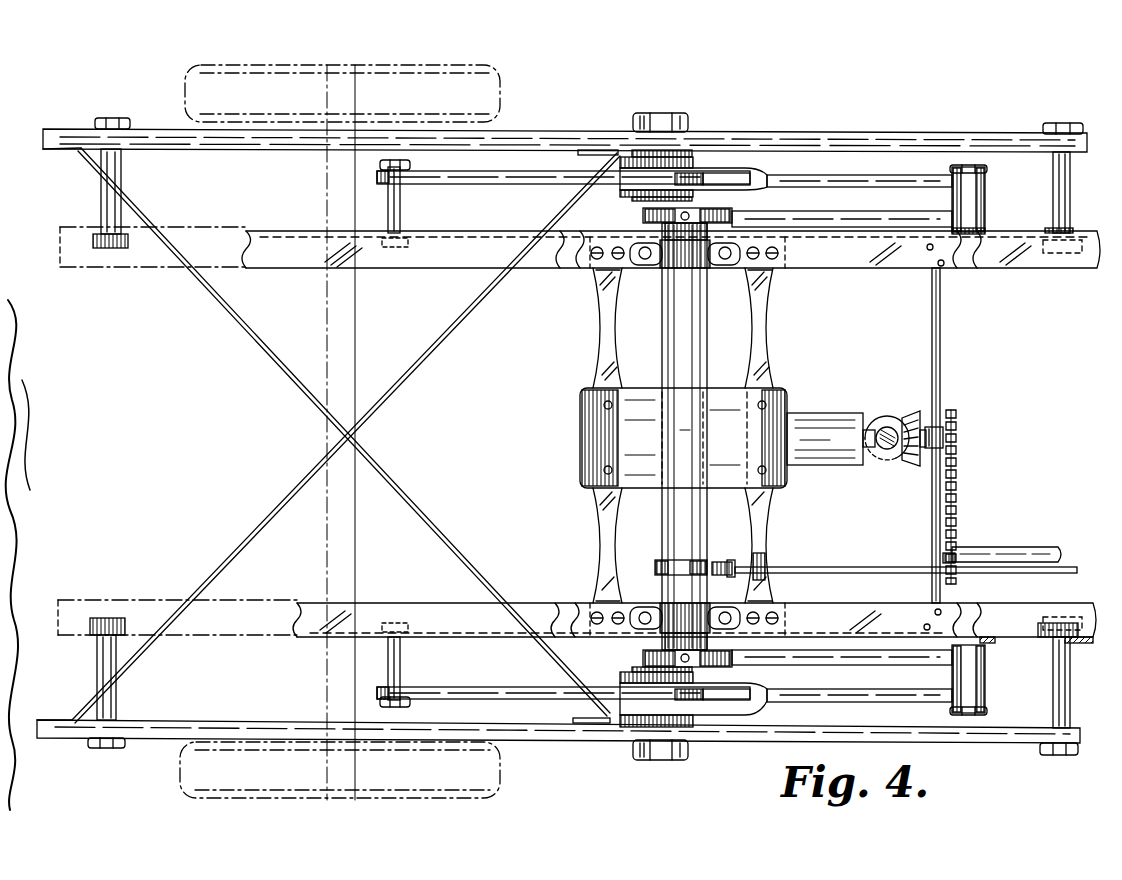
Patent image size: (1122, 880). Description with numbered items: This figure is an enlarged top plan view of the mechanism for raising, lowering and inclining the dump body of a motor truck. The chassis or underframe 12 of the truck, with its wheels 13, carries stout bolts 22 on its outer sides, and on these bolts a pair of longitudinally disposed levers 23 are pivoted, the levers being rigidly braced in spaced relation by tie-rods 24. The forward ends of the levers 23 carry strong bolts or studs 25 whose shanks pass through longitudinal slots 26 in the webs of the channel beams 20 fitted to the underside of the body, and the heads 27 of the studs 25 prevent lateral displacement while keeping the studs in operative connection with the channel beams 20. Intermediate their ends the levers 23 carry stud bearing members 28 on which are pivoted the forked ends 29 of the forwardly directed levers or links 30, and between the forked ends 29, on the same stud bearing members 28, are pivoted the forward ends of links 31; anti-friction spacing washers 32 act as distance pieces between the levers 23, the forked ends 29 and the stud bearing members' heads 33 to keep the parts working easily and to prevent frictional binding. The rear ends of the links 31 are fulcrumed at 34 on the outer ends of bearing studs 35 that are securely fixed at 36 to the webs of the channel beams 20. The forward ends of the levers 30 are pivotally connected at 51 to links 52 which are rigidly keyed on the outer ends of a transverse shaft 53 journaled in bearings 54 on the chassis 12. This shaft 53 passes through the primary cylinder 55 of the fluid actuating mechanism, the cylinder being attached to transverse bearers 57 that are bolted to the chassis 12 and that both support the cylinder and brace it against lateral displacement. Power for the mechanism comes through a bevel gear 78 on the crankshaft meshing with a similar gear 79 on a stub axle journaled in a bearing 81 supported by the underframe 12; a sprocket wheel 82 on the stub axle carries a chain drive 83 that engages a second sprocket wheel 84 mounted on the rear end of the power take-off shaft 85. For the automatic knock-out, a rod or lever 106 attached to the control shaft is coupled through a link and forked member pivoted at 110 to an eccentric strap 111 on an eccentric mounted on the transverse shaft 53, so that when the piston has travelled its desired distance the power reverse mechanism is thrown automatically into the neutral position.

The chassis or underframe 12 is at (121, 268).
The wheels 13 is at (500, 90).
The longitudinal channel beams 20 is at (432, 268).
The stout bolts 22 is at (100, 186).
The longitudinally disposed levers 23 is at (192, 135).
The tie-rods 24 is at (235, 322).
The bolts or studs 25 is at (1071, 186).
The longitudinal slots 26 is at (996, 232).
The heads 27 is at (1065, 254).
The stud bearing members 28 is at (662, 113).
The forked ends 29 is at (725, 173).
The forwardly directed levers or links 30 is at (880, 175).
The links 31 is at (510, 186).
The anti-friction spacing washers 32 is at (630, 150).
The stud bearing members' heads 33 is at (643, 215).
The fulcrum 34 is at (400, 182).
The bearing studs 35 is at (386, 212).
The fixing point 36 is at (385, 248).
The pivotal connection 51 is at (972, 196).
The links 52 is at (845, 211).
The transverse shaft 53 is at (662, 318).
The bearings 54 is at (722, 268).
The primary cylinder 55 is at (580, 437).
The transverse bearers 57 is at (598, 338).
The bevel gear 78 is at (878, 416).
The bevel gear 79 is at (912, 412).
The bearing 81 is at (941, 383).
The sprocket wheel 82 is at (948, 412).
The chain drive 83 is at (958, 466).
The second sprocket wheel 84 is at (943, 557).
The power take-off shaft 85 is at (1020, 547).
The rod or lever 106 is at (812, 567).
The pivot 110 is at (722, 562).
The eccentric strap 111 is at (655, 567).